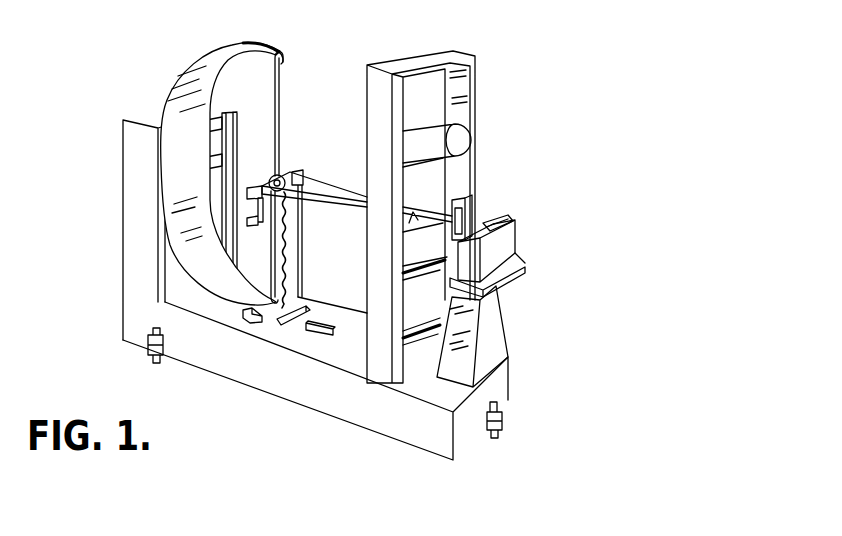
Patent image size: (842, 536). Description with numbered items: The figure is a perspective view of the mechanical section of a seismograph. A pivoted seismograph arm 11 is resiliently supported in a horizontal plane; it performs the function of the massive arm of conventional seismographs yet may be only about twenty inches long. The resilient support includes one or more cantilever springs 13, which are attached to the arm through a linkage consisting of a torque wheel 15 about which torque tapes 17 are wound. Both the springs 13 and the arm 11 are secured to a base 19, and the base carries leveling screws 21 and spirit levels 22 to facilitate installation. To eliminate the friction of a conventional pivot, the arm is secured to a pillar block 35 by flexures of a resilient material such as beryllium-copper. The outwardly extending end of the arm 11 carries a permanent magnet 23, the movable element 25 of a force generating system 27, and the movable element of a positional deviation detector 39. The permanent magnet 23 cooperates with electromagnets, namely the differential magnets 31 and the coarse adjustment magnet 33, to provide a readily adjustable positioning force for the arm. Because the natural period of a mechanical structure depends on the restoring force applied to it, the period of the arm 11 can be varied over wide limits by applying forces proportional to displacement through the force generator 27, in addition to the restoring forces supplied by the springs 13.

The seismograph arm 11 is at (333, 180).
The cantilever spring 13 is at (189, 62).
The torque wheel 15 is at (271, 177).
The torque tapes 17 is at (282, 140).
The base 19 is at (258, 385).
The leveling screws 21 is at (148, 350).
The spirit levels 22 is at (321, 327).
The permanent magnet 23 is at (441, 207).
The movable element 25 is at (462, 222).
The force generating system 27 is at (457, 222).
The differential magnets 31 is at (436, 128).
The coarse adjustment magnet 33 is at (428, 337).
The pillar block 35 is at (293, 215).
The positional deviation detector 39 is at (526, 239).